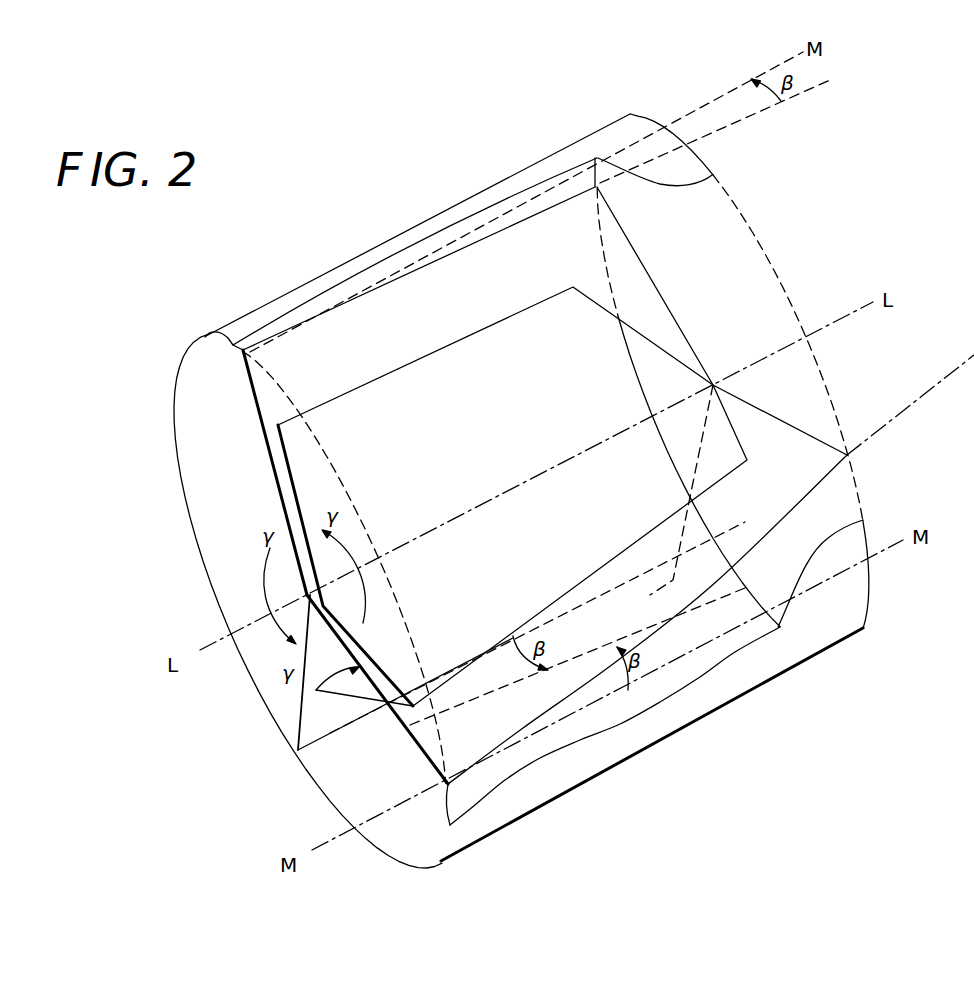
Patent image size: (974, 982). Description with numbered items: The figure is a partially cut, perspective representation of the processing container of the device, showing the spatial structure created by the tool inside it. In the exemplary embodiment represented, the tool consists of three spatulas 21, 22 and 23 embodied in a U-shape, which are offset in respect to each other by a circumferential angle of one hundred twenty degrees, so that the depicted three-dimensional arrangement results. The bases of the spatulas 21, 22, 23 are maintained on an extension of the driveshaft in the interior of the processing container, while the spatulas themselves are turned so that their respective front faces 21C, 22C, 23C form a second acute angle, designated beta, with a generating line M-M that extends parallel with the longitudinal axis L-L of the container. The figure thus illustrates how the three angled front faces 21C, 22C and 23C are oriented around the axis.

The spatula 21 is at (439, 317).
The front face 21C is at (400, 270).
The spatula 22 is at (492, 738).
The front face 22C is at (528, 730).
The spatula 23 is at (341, 722).
The front face 23C is at (332, 748).